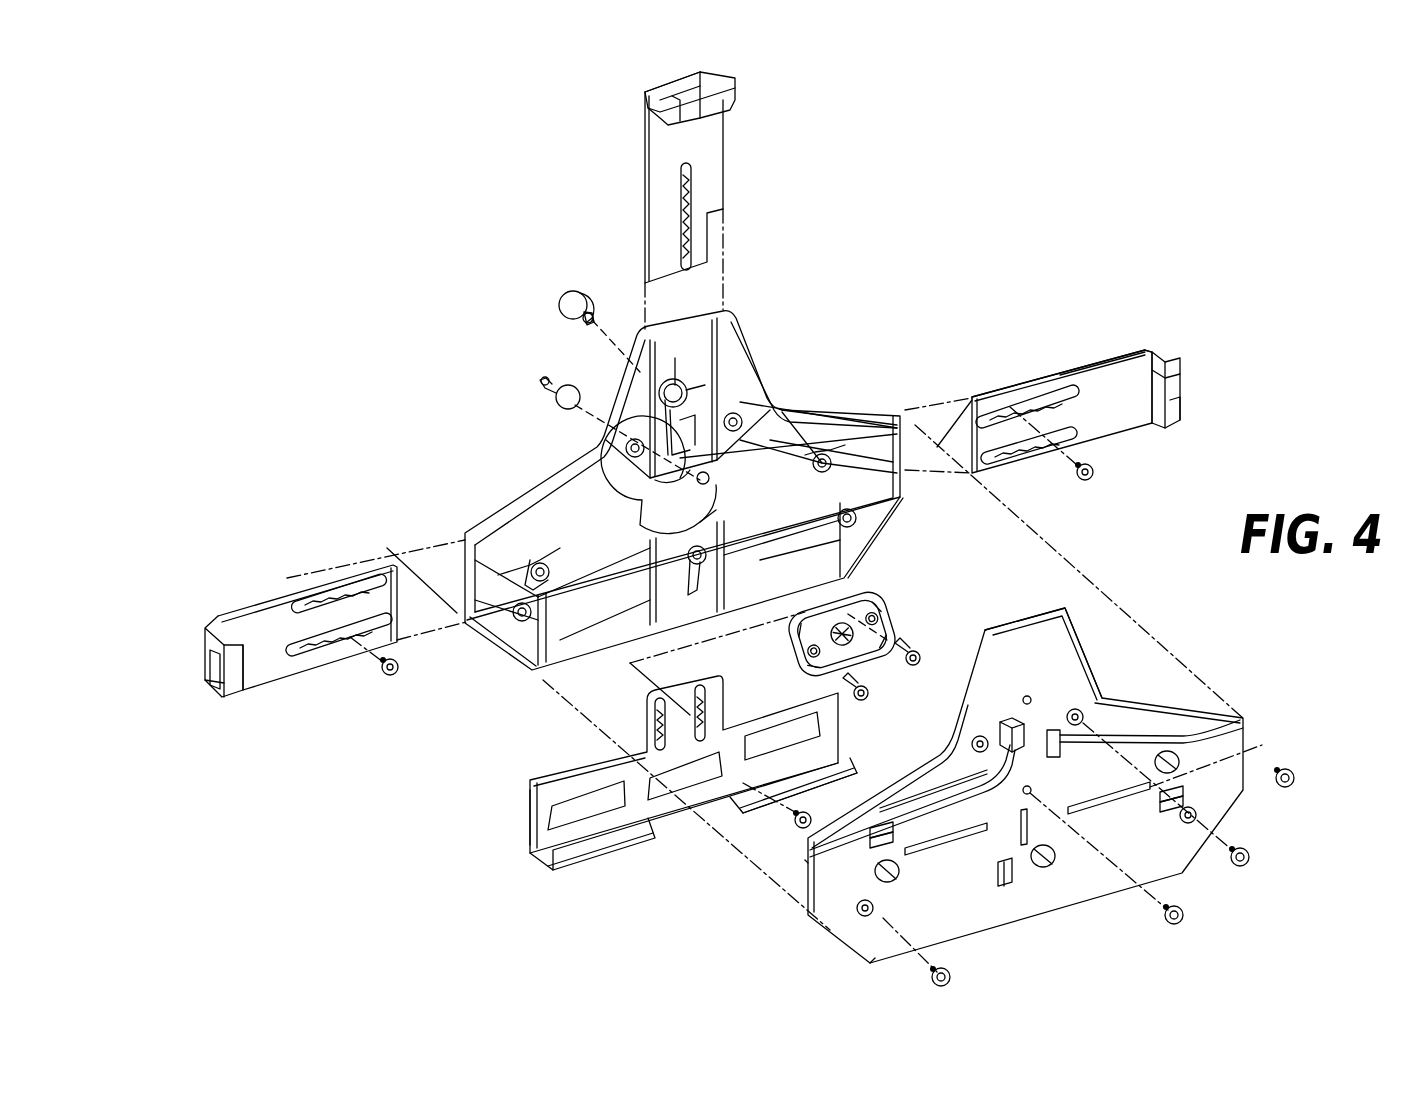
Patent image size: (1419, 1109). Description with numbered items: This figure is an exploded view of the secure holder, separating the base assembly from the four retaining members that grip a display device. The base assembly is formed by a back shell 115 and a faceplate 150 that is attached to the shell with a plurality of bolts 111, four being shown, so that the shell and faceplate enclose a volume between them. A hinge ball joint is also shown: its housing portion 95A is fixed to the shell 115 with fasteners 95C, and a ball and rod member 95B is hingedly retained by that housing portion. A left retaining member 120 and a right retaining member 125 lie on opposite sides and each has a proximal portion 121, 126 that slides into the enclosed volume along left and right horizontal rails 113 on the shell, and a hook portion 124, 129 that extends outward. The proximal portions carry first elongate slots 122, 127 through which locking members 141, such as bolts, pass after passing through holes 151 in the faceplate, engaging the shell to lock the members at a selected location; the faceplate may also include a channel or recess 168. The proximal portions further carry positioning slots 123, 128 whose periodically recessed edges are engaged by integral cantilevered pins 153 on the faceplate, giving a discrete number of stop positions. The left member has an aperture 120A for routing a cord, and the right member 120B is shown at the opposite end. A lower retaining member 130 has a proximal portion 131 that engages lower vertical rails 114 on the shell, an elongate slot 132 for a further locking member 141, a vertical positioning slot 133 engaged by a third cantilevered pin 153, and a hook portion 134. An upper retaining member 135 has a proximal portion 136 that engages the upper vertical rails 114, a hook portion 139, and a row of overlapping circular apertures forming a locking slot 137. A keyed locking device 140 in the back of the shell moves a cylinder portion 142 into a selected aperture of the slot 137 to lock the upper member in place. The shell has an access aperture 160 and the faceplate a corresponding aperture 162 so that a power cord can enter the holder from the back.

The housing portion 95A is at (893, 603).
The ball and rod member 95B is at (556, 400).
The fasteners 95C is at (868, 695).
The bolts 111 is at (950, 977).
The horizontal rails 113 is at (823, 437).
The vertical rails 114 is at (727, 360).
The back shell 115 is at (780, 402).
The left retaining member 120 is at (270, 682).
The aperture 120A is at (215, 666).
The right extension rail 120B is at (1162, 362).
The proximal portion 121 is at (253, 624).
The first elongate slot 122 is at (328, 650).
The positioning slot 123 is at (357, 588).
The hook portion 124 is at (205, 640).
The right retaining member 125 is at (1080, 363).
The proximal portion 126 is at (1128, 390).
The first elongate slot 127 is at (1038, 400).
The positioning slot 128 is at (1020, 452).
The hook portion 129 is at (1176, 367).
The lower retaining member 130 is at (637, 860).
The proximal portion 131 is at (543, 800).
The elongate slot 132 is at (710, 714).
The vertical positioning slot 133 is at (656, 718).
The hook portion 134 is at (850, 767).
The upper retaining member 135 is at (727, 147).
The proximal portion 136 is at (661, 178).
The locking slot 137 is at (691, 190).
The hook portion 139 is at (736, 83).
The keyed locking device 140 is at (558, 300).
The locking members 141 is at (394, 676).
The cylinder portion 142 is at (590, 320).
The faceplate 150 is at (1155, 706).
The holes 151 is at (1052, 864).
The cantilevered pins 153 is at (878, 838).
The access aperture 160 is at (688, 392).
The aperture 162 is at (1058, 697).
The recess 168 is at (1010, 722).